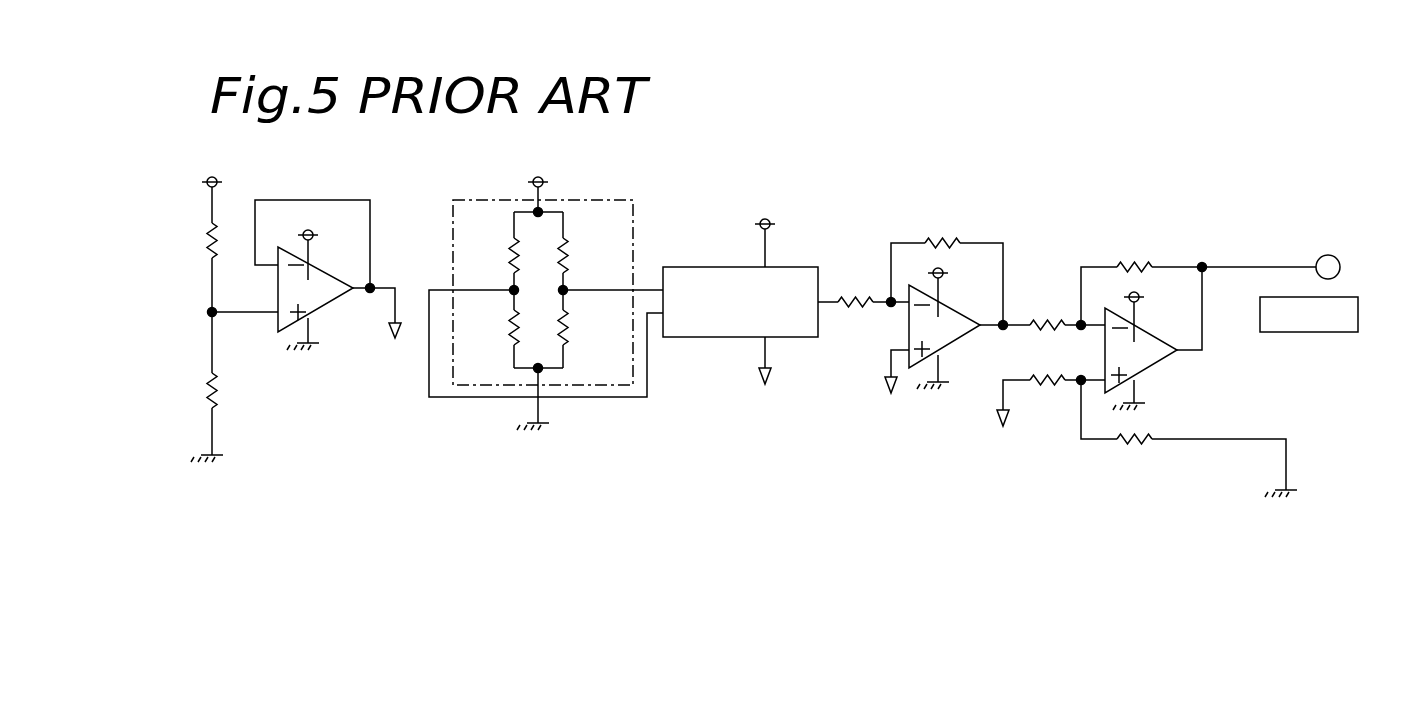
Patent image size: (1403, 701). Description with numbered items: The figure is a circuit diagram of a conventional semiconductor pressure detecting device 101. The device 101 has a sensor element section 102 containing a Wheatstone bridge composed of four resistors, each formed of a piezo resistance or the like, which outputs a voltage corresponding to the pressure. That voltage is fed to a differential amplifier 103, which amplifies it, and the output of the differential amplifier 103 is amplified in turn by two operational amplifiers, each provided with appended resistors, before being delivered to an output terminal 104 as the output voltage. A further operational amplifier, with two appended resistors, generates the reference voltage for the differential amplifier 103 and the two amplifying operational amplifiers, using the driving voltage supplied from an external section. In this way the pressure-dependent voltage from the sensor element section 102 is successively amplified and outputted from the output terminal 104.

The semiconductor pressure detecting device 101 is at (1227, 187).
The sensor element section 102 is at (613, 385).
The differential amplifier 103 is at (793, 267).
The output terminal 104 is at (1328, 255).